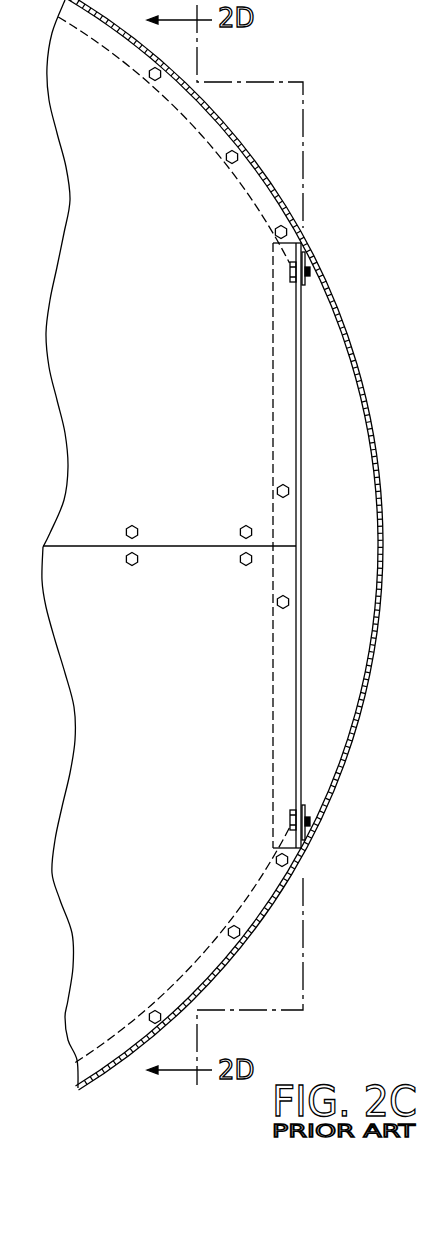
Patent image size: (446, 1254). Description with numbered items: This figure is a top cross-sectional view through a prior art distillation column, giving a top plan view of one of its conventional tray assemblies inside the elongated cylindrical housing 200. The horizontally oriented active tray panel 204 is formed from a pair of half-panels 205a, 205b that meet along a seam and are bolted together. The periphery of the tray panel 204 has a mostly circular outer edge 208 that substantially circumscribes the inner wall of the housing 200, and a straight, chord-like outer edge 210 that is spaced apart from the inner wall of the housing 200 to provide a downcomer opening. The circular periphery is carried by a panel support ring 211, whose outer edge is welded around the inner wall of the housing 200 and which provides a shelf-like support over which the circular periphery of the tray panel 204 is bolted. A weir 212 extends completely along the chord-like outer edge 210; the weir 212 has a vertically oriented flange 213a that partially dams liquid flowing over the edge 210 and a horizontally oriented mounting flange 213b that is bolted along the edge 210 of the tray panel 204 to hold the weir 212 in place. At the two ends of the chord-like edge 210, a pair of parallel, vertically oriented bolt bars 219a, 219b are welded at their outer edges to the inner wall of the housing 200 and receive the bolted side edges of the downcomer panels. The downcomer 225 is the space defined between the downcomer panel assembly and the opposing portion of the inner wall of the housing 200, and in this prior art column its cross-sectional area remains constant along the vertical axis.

The cylindrical housing 200 is at (207, 105).
The circular outer edge 208 is at (227, 128).
The panel support ring 211 is at (258, 197).
The bolt bar 219b is at (309, 254).
The half-panel 205a is at (175, 320).
The chord-like outer edge 210 is at (298, 427).
The mounting flange 213b is at (278, 447).
The vertically-oriented flange 213a is at (300, 477).
The active tray panel 204 is at (78, 535).
The downcomer 225 is at (353, 550).
The weir 212 is at (296, 655).
The half-panel 205b is at (167, 712).
The bolt bar 219a is at (309, 832).